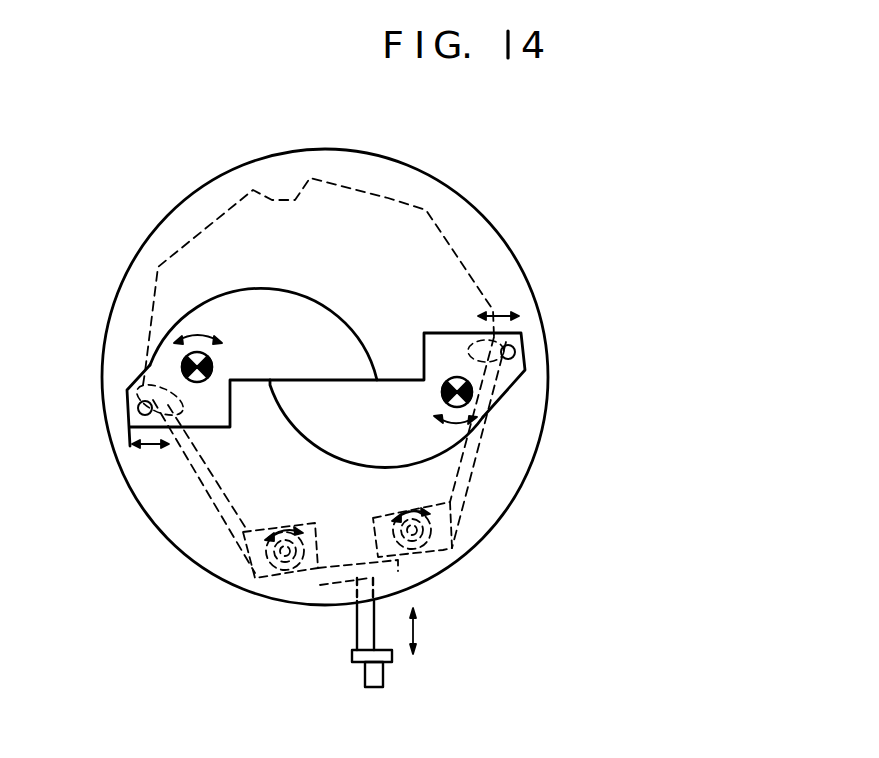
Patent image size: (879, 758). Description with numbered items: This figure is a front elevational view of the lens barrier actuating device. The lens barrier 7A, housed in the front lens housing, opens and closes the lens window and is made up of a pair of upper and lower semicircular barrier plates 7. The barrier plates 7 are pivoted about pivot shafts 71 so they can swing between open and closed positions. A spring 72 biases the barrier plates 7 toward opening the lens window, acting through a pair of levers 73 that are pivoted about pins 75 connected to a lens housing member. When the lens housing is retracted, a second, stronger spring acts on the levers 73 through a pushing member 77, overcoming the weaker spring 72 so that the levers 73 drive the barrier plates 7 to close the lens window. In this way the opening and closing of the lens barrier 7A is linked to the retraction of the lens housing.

The barrier plates 7 is at (257, 303).
The lens barrier 7A is at (363, 413).
The pivot shafts 71 is at (183, 359).
The spring 72 is at (388, 198).
The levers 73 is at (182, 457).
The pins 75 is at (427, 552).
The pushing member 77 is at (378, 635).